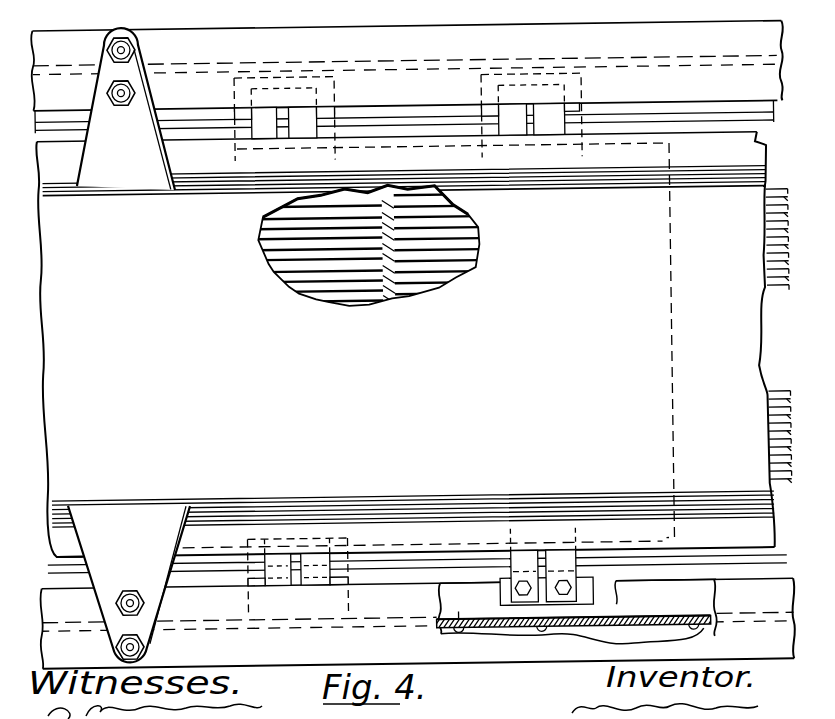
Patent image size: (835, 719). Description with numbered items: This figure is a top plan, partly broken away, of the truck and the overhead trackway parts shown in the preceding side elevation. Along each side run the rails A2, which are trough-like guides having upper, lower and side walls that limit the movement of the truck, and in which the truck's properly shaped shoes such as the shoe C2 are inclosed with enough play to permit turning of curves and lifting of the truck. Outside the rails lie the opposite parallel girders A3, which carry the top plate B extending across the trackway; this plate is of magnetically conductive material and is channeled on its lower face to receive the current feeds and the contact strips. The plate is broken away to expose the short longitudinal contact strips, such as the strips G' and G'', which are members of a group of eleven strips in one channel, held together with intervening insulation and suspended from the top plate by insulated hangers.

The rails A2 is at (443, 117).
The parallel girders A3 is at (407, 66).
The top plate B is at (414, 344).
The shoe C2 is at (333, 107).
The contact strip G' is at (362, 283).
The contact strip G'' is at (361, 246).